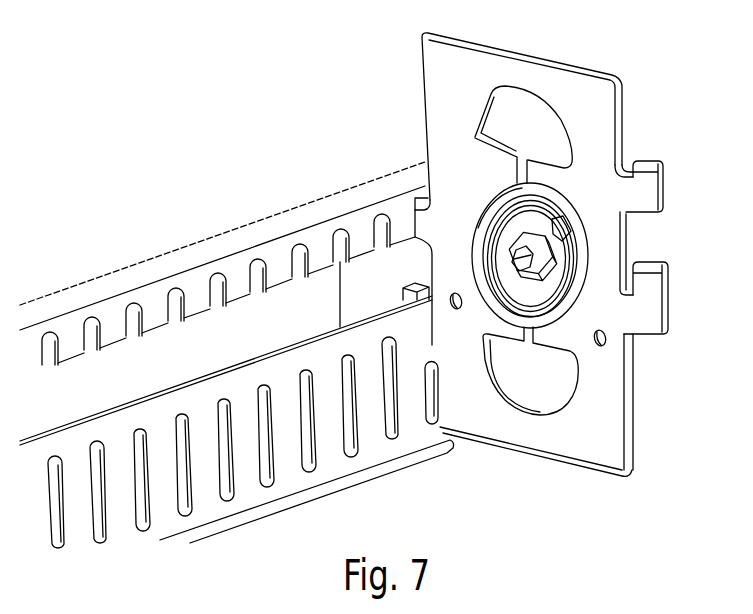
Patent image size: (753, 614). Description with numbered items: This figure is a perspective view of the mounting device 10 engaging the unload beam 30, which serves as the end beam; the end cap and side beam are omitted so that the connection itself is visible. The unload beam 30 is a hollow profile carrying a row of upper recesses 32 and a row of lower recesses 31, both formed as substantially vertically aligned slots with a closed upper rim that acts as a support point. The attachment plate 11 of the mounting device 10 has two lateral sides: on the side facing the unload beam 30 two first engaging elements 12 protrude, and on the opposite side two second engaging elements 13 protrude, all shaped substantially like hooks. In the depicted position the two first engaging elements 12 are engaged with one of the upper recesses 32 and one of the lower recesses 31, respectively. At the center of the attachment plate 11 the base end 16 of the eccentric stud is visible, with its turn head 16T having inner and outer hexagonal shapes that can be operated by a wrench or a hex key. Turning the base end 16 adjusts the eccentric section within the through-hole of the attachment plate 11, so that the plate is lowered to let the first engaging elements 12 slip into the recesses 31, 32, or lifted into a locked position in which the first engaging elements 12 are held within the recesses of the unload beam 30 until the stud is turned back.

The mounting device 10 is at (601, 80).
The attachment plate 11 is at (612, 426).
The first engaging elements 12 is at (402, 298).
The second engaging elements 13 is at (642, 188).
The base end 16 is at (547, 208).
The turn head 16T is at (520, 277).
The unload beam 30 is at (192, 253).
The lower recesses 31 is at (227, 480).
The upper recesses 32 is at (300, 257).